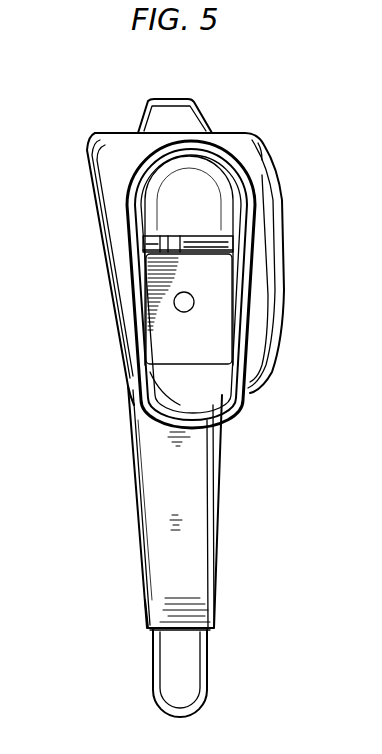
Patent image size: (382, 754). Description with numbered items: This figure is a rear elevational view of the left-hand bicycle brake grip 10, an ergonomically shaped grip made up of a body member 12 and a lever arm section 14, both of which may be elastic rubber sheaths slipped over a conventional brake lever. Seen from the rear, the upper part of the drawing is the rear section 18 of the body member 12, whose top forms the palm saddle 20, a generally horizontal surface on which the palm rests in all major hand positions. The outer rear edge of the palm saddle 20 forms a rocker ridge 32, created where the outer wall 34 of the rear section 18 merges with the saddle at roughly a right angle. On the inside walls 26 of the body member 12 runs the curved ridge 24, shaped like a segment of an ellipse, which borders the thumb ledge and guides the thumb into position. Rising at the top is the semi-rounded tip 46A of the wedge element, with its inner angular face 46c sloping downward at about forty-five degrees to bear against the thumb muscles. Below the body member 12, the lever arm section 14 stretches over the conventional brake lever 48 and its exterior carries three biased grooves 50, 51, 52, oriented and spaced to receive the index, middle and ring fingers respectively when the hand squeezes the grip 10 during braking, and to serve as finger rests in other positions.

The bicycle brake grip 10 is at (288, 380).
The body member 12 is at (266, 176).
The lever arm section 14 is at (200, 466).
The rear section 18 is at (125, 300).
The palm saddle 20 is at (243, 135).
The curved ridge 24 is at (278, 324).
The inside walls 26 is at (257, 258).
The rocker ridge 32 is at (90, 146).
The outer wall 34 is at (93, 234).
The semi-rounded tip 46A is at (167, 108).
The inner angular face 46c is at (213, 120).
The brake lever 48 is at (207, 688).
The biased groove 50 is at (123, 378).
The biased groove 51 is at (135, 467).
The biased groove 52 is at (142, 550).